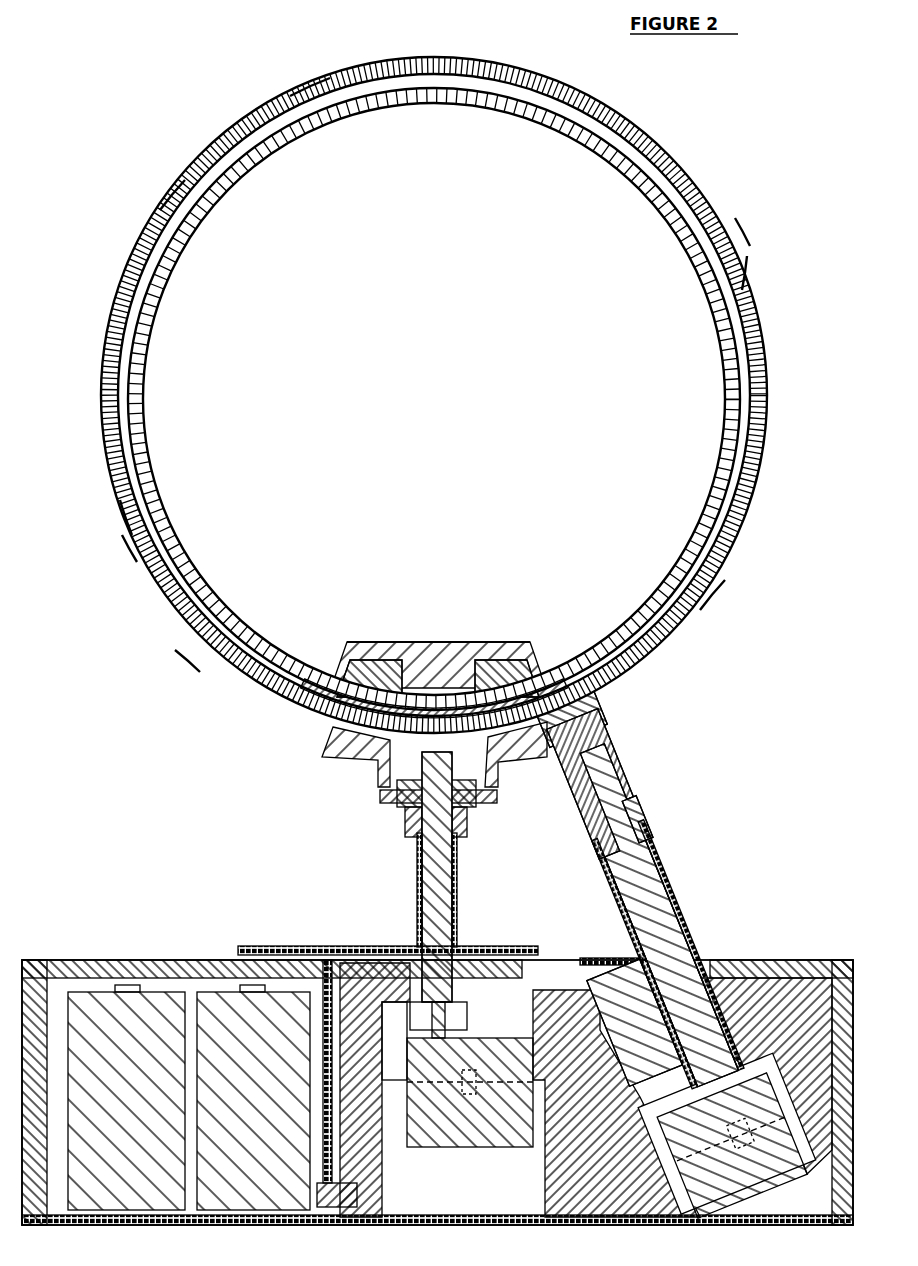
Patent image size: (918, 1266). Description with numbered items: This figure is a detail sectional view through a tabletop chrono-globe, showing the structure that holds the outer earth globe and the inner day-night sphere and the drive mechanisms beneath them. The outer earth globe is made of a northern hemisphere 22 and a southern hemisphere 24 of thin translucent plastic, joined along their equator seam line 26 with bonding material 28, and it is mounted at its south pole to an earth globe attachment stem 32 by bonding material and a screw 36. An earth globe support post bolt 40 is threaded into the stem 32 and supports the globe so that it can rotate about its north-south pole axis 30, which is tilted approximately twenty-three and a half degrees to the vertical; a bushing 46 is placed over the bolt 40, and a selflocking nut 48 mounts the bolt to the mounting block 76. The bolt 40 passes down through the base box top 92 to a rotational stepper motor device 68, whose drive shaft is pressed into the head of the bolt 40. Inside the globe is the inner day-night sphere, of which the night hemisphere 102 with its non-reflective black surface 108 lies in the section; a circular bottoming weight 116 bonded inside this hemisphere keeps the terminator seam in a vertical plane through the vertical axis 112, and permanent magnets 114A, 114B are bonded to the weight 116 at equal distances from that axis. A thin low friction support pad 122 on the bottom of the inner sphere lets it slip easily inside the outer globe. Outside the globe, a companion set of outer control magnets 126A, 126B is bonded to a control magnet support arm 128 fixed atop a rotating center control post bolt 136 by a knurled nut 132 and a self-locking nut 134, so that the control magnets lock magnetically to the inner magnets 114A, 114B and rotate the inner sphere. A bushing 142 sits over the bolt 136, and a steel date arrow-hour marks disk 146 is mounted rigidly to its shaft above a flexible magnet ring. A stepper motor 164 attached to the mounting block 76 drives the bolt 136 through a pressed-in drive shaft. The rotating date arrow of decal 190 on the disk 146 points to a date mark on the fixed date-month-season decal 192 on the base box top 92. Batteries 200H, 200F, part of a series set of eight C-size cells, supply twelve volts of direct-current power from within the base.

The northern hemisphere 22 is at (668, 165).
The southern hemisphere 24 is at (715, 601).
The equator seam line 26 is at (750, 232).
The bonding material 28 is at (745, 272).
The north-south pole axis 30 is at (299, 82).
The earth globe attachment stem 32 is at (620, 756).
The screw 36 is at (590, 716).
The earth globe support post bolt 40 is at (668, 921).
The bushing 46 is at (667, 872).
The selflocking nut 48 is at (645, 822).
The rotational stepper motor device 68 is at (765, 1145).
The mounting block 76 is at (604, 1105).
The base box top 92 is at (78, 960).
The night hemisphere 102 is at (180, 242).
The non-reflective black surface 108 is at (165, 197).
The vertical axis 112 is at (428, 638).
The permanent magnet 114A is at (373, 660).
The permanent magnet 114B is at (488, 660).
The circular bottoming weight 116 is at (420, 656).
The low friction support pad 122 is at (322, 712).
The outer control magnet 126A is at (334, 746).
The outer control magnet 126B is at (508, 760).
The control magnet support arm 128 is at (384, 797).
The knurled nut 132 is at (470, 792).
The self-locking nut 134 is at (407, 831).
The center control post bolt 136 is at (417, 917).
The bushing 142 is at (421, 884).
The steel date arrow-hour marks disk 146 is at (345, 957).
The stepper motor 164 is at (505, 1038).
The rotating date arrow decal 190 is at (280, 947).
The fixed date-month-season decal 192 is at (48, 960).
The battery 200H is at (140, 1040).
The battery 200F is at (245, 1045).